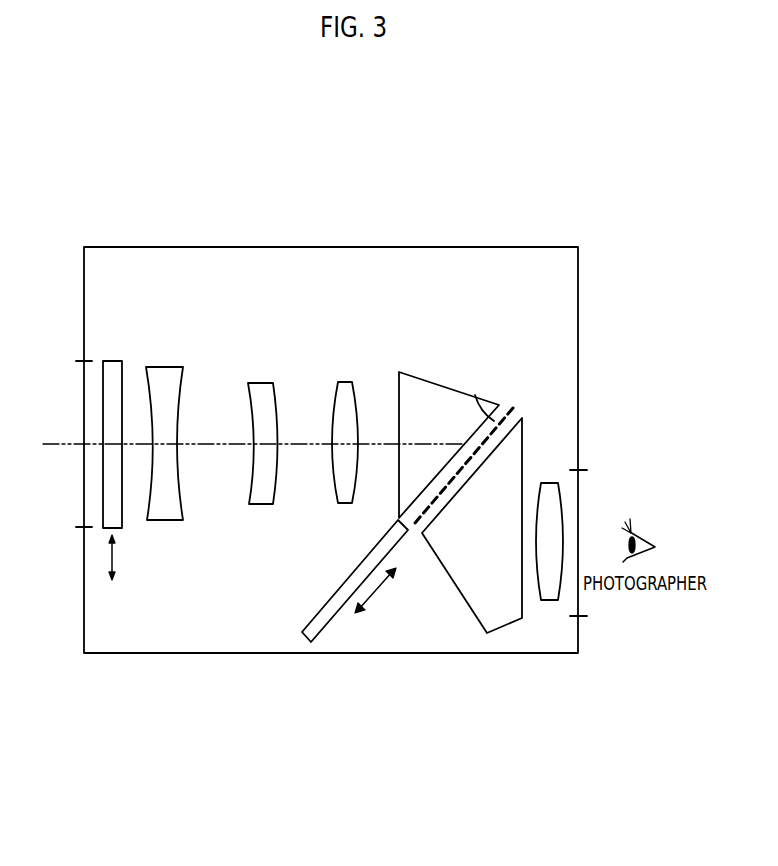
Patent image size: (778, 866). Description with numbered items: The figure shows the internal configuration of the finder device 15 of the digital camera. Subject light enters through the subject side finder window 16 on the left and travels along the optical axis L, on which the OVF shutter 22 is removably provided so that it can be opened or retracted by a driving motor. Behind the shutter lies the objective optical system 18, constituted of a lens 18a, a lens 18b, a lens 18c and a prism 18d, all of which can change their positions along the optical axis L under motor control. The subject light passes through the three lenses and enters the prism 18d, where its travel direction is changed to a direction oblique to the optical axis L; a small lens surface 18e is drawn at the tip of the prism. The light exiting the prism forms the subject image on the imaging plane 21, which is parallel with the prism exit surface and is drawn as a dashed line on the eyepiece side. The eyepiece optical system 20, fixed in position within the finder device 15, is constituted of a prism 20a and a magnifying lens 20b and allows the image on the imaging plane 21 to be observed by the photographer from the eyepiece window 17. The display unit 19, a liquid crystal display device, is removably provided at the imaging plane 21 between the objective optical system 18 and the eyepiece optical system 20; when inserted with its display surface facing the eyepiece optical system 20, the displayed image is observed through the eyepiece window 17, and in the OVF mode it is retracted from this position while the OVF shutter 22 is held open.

The finder device 15 is at (528, 247).
The subject side finder window 16 is at (92, 514).
The eyepiece window 17 is at (578, 487).
The objective optical system 18 is at (425, 307).
The lens 18a is at (163, 378).
The lens 18b is at (265, 392).
The lens 18c is at (343, 390).
The prism 18d is at (406, 380).
The lens surface of prism 18e is at (477, 398).
The display unit 19 is at (340, 602).
The eyepiece optical system 20 is at (575, 697).
The prism 20a is at (497, 612).
The magnifying lens 20b is at (550, 600).
The imaging plane 21 is at (510, 411).
The OVF shutter 22 is at (113, 368).
The optical axis L is at (52, 444).